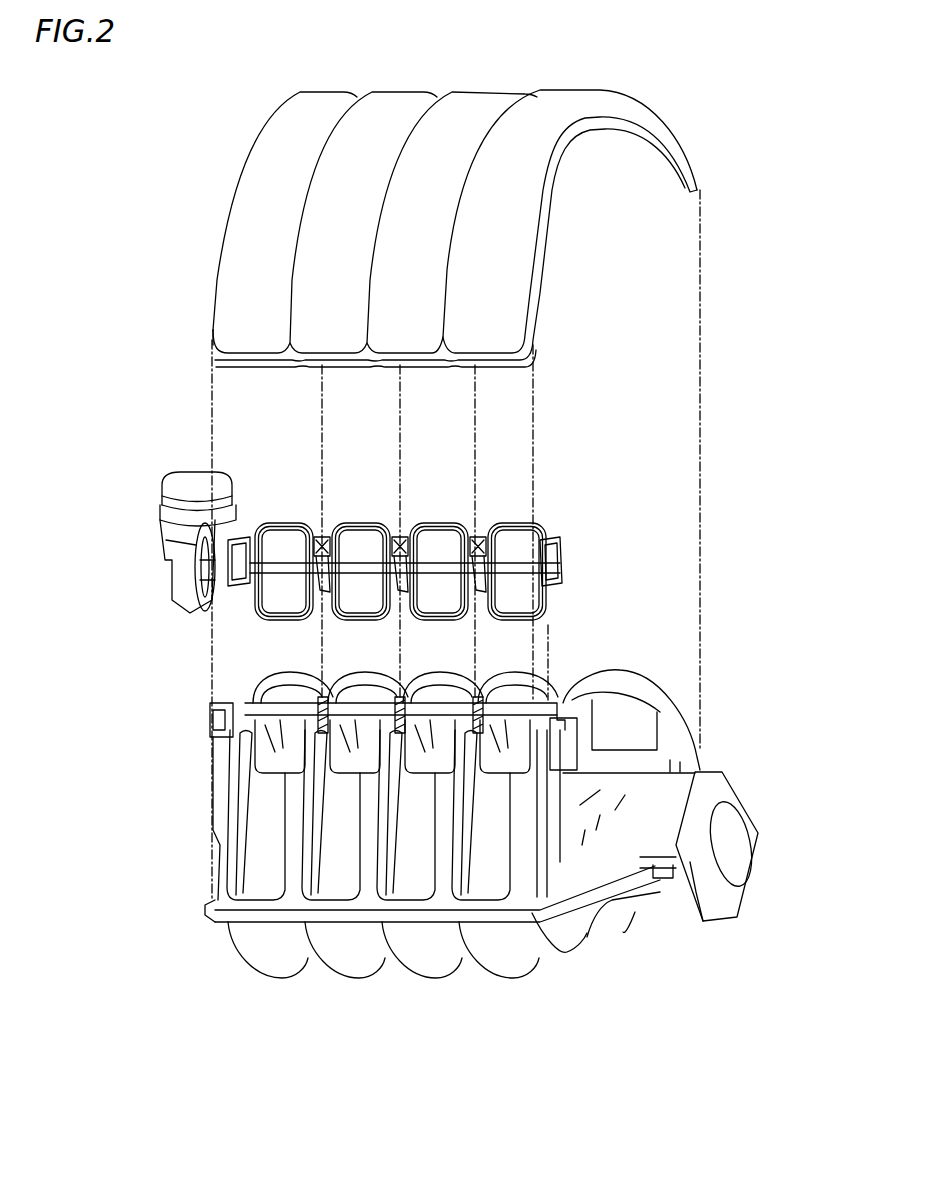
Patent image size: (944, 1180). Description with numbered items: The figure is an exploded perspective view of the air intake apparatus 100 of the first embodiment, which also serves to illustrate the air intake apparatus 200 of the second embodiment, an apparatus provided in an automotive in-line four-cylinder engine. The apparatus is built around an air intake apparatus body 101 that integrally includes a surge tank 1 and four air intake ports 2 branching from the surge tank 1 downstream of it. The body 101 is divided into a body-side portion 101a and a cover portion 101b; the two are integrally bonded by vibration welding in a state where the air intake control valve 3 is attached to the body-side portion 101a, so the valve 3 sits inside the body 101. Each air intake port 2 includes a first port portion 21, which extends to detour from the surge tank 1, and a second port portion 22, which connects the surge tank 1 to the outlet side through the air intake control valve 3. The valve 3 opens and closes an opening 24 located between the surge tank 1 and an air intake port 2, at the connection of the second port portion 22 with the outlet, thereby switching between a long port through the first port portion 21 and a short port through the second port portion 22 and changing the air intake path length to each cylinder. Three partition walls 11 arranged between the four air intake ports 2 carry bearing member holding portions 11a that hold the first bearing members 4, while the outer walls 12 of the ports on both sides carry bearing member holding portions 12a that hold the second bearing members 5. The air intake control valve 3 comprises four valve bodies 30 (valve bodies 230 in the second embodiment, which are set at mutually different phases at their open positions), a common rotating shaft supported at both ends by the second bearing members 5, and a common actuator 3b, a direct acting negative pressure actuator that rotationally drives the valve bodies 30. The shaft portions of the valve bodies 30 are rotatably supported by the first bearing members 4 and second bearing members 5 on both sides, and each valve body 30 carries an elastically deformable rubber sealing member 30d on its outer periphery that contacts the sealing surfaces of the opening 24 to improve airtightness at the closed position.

The air intake apparatus 100 is at (738, 97).
The air intake apparatus 200 is at (535, 361).
The air intake apparatus body 101 is at (805, 157).
The body-side portion 101a is at (715, 687).
The cover portion 101b is at (700, 143).
The surge tank 1 is at (623, 907).
The air intake ports 2 is at (287, 965).
The air intake control valve 3 is at (152, 522).
The actuator 3b is at (195, 470).
The first bearing members 4 is at (322, 535).
The second bearing members 5 is at (245, 535).
The partition walls 11 is at (293, 855).
The bearing member holding portions 11a is at (287, 738).
The outer walls 12 is at (228, 857).
The bearing member holding portions 12a is at (245, 703).
The first port portion 21 is at (262, 888).
The second port portion 22 is at (243, 720).
The opening 24 is at (277, 762).
The valve bodies 30 is at (285, 540).
The valve bodies 230 is at (412, 542).
The sealing member 30d is at (308, 527).